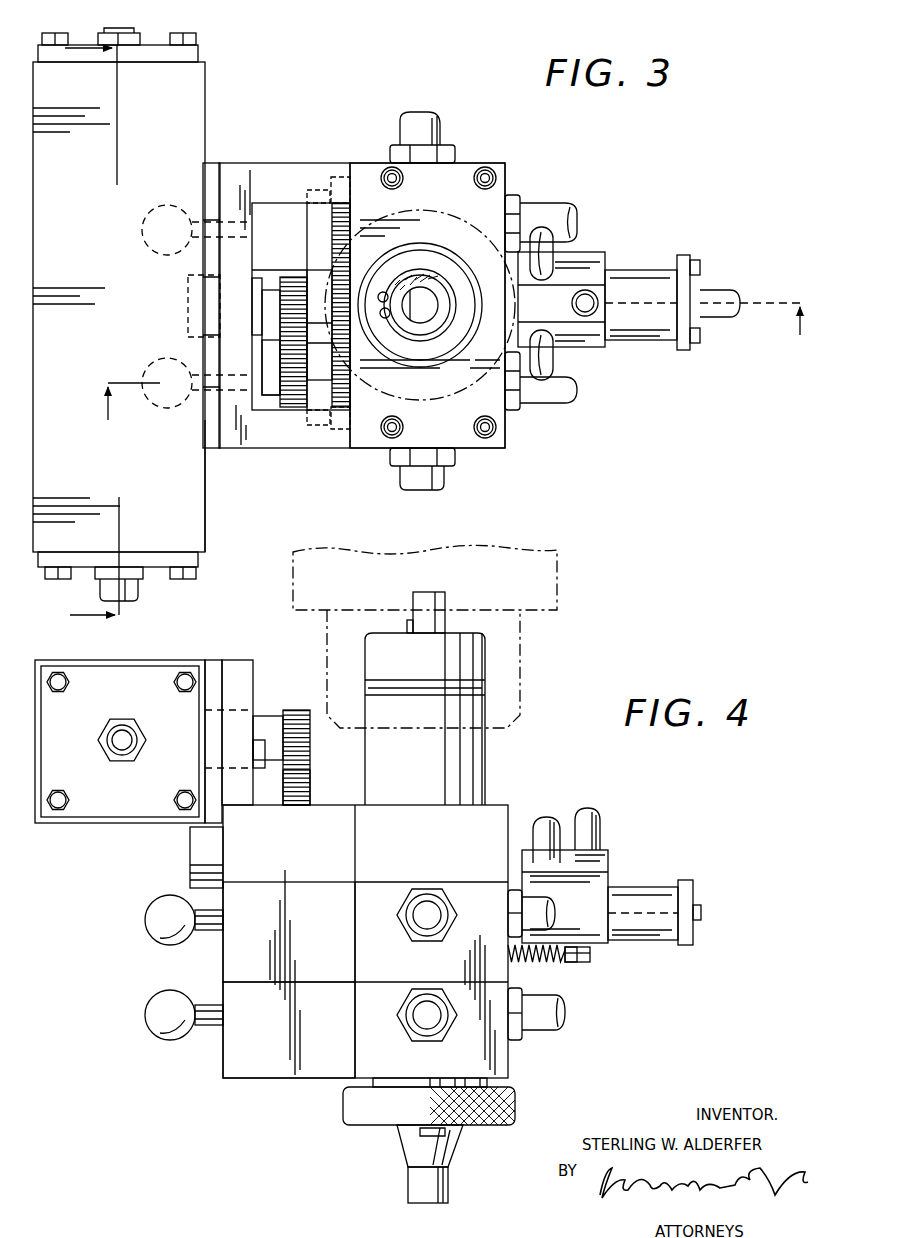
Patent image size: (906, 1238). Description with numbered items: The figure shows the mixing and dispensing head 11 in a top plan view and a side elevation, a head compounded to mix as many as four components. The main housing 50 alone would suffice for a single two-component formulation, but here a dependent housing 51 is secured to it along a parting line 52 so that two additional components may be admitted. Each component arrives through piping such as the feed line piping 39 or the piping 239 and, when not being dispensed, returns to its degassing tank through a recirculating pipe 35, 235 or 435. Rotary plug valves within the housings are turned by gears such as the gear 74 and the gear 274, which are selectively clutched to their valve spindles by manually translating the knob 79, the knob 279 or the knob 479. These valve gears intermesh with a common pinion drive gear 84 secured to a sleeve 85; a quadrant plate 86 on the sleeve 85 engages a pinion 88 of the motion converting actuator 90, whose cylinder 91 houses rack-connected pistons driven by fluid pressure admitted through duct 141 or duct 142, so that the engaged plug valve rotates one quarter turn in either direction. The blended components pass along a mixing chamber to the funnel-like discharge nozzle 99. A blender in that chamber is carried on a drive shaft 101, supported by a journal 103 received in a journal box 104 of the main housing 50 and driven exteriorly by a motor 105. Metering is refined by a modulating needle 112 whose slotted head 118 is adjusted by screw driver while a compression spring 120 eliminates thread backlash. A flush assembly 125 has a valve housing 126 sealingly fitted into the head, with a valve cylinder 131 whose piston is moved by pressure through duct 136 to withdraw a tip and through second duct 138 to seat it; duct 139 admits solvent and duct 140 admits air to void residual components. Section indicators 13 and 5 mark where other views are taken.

In FIG. 3, the mixing and dispensing head 11 is at (480, 456).
In FIG. 4, the mixing and dispensing head 11 is at (256, 1082).
In FIG. 3, the section line 13 is at (109, 340).
In FIG. 3, the section line 5 is at (450, 349).
In FIG. 3, the recirculating pipe 35 is at (406, 140).
In FIG. 3, the feed line piping 39 is at (557, 210).
In FIG. 4, the main housing 50 is at (289, 932).
In FIG. 4, the dependent housing 51 is at (289, 1030).
In FIG. 4, the parting line 52 is at (385, 980).
In FIG. 3, the gear 74 is at (346, 250).
In FIG. 3, the knob 79 is at (142, 228).
In FIG. 3, the pinion drive gear 84 is at (383, 305).
In FIG. 3, the sleeve 85 is at (325, 290).
In FIG. 3, the quadrant plate 86 is at (283, 372).
In FIG. 4, the quadrant plate 86 is at (311, 793).
In FIG. 3, the pinion 88 is at (292, 330).
In FIG. 4, the pinion 88 is at (296, 710).
In FIG. 3, the motion converting actuator 90 is at (208, 128).
In FIG. 4, the motion converting actuator 90 is at (102, 826).
In FIG. 3, the cylinder 91 is at (206, 512).
In FIG. 4, the discharge nozzle 99 is at (409, 1137).
In FIG. 3, the drive shaft 101 is at (427, 292).
In FIG. 4, the drive shaft 101 is at (430, 600).
In FIG. 3, the journal 103 is at (450, 288).
In FIG. 3, the journal box 104 is at (442, 350).
In FIG. 4, the journal box 104 is at (484, 774).
In FIG. 3, the motor 105 is at (508, 426).
In FIG. 4, the motor 105 is at (550, 600).
In FIG. 4, the modulating needle 112 is at (582, 964).
In FIG. 4, the head 118 is at (590, 955).
In FIG. 4, the compression spring 120 is at (530, 960).
In FIG. 3, the flush assembly 125 is at (668, 350).
In FIG. 4, the flush assembly 125 is at (645, 945).
In FIG. 3, the valve housing 126 is at (605, 262).
In FIG. 4, the valve housing 126 is at (608, 862).
In FIG. 3, the valve cylinder 131 is at (648, 282).
In FIG. 4, the valve cylinder 131 is at (652, 900).
In FIG. 3, the duct 136 is at (598, 303).
In FIG. 4, the duct 136 is at (598, 815).
In FIG. 3, the second duct 138 is at (727, 318).
In FIG. 3, the duct 139 is at (558, 248).
In FIG. 3, the duct 140 is at (560, 355).
In FIG. 4, the duct 140 is at (548, 820).
In FIG. 3, the duct 141 is at (136, 590).
In FIG. 4, the duct 141 is at (132, 754).
In FIG. 3, the duct 142 is at (150, 42).
In FIG. 3, the recirculating pipe 235 is at (402, 472).
In FIG. 4, the recirculating pipe 235 is at (427, 898).
In FIG. 3, the piping 239 is at (565, 403).
In FIG. 4, the piping 239 is at (510, 913).
In FIG. 3, the gear 274 is at (350, 400).
In FIG. 3, the knob 279 is at (164, 408).
In FIG. 4, the knob 279 is at (163, 903).
In FIG. 4, the recirculating pipe 435 is at (424, 1036).
In FIG. 4, the knob 479 is at (150, 1003).